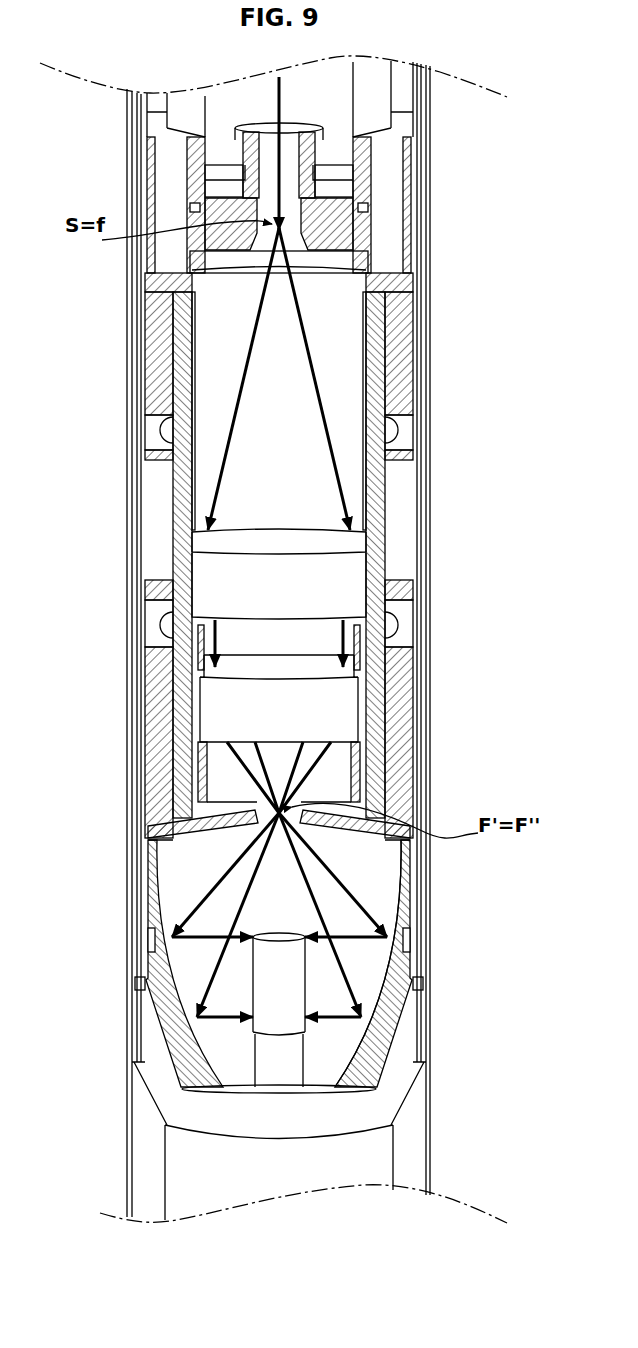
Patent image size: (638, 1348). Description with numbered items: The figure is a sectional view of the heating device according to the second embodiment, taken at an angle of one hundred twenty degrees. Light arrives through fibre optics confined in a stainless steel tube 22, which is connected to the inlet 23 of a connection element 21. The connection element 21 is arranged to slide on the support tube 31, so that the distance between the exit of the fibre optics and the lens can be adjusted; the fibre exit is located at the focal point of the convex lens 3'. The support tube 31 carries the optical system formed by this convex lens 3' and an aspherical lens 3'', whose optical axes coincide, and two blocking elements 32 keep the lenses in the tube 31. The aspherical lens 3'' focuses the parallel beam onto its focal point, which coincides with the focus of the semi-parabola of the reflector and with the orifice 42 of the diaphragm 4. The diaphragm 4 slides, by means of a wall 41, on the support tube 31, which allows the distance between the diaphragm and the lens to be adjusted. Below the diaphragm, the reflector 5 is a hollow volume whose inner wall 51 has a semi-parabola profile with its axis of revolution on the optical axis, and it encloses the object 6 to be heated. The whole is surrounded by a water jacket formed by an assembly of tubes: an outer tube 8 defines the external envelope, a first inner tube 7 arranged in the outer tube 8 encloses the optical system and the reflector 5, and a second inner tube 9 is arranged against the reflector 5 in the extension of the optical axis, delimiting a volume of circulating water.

The tube 22 is at (367, 93).
The inlet 23 is at (318, 152).
The connection element 21 is at (355, 235).
The outer tube 8 is at (430, 312).
The support tube 31 is at (375, 372).
The blocking elements 32 is at (383, 500).
The wall 41 is at (385, 556).
The convex lens 3' is at (344, 598).
The aspherical lens 3'' is at (342, 698).
The first inner tube 7 is at (422, 758).
The orifice 42 is at (253, 800).
The diaphragm 4 is at (206, 832).
The inner wall 51 is at (375, 875).
The object 6 is at (290, 990).
The reflector 5 is at (380, 1025).
The second inner tube 9 is at (345, 1165).